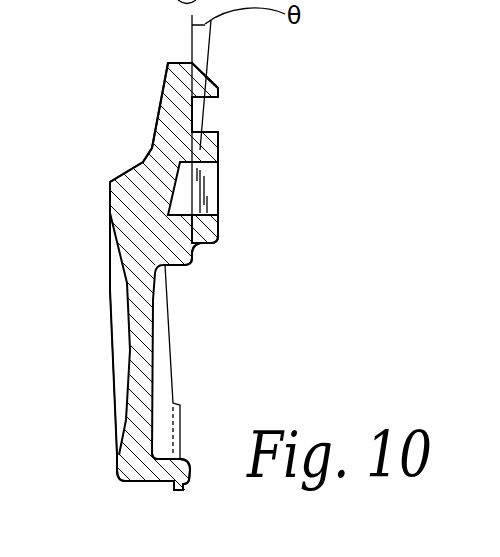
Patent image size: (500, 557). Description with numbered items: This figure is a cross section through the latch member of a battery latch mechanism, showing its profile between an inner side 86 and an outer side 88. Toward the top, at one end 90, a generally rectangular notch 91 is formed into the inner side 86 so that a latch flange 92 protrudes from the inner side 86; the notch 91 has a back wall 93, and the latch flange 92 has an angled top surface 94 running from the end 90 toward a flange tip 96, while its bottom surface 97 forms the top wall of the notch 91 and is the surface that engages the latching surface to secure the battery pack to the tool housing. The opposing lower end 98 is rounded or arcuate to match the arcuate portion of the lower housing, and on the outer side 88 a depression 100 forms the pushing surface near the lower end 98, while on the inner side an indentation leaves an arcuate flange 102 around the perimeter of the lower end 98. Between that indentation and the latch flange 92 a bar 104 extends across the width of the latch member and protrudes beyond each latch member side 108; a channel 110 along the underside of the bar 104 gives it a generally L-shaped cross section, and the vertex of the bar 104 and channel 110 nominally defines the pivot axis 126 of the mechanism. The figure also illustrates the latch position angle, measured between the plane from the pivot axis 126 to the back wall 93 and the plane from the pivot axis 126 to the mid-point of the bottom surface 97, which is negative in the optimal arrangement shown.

The inner side 86 is at (219, 148).
The outer side 88 is at (108, 202).
The end 90 is at (177, 63).
The notch 91 is at (208, 119).
The latch flange 92 is at (204, 75).
The back wall 93 is at (196, 107).
The angled top surface 94 is at (213, 78).
The flange tip 96 is at (219, 89).
The bottom surface 97 is at (210, 103).
The opposing lower end 98 is at (143, 481).
The depression 100 is at (128, 348).
The arcuate flange 102 is at (179, 420).
The bar 104 is at (216, 219).
The latch member side 108 is at (127, 433).
The channel 110 is at (201, 246).
The pivot axis 126 is at (193, 264).